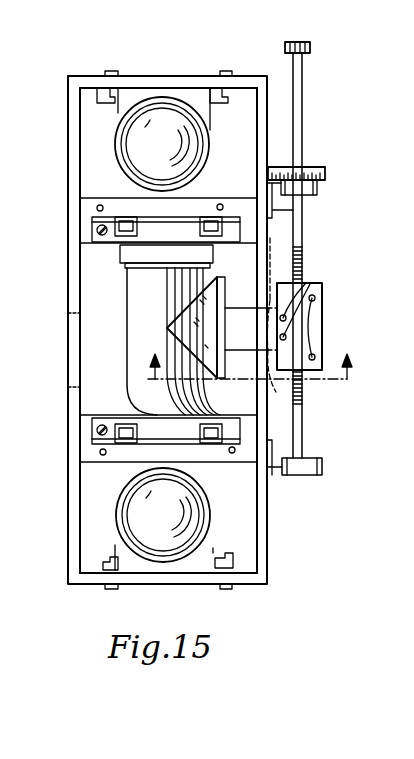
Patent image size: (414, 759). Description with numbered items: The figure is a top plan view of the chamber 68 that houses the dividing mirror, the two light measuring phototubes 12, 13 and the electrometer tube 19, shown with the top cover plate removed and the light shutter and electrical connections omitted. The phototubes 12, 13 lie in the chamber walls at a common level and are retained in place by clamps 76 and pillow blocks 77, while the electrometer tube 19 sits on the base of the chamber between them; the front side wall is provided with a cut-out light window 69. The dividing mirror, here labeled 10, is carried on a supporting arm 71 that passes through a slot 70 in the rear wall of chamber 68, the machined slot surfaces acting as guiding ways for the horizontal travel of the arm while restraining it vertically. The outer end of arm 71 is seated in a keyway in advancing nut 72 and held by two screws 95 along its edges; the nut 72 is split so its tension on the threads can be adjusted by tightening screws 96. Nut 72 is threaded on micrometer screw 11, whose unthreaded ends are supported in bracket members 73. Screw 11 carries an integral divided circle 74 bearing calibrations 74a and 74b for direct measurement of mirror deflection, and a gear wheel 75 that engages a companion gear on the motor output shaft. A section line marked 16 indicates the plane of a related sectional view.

The prism 10 is at (212, 378).
The micrometer screw 11 is at (302, 106).
The phototube 12 is at (166, 112).
The phototube 13 is at (145, 524).
The section line 16 is at (250, 360).
The electrometer tube 19 is at (140, 325).
The chamber 68 is at (74, 178).
The light window 69 is at (76, 306).
The slot 70 is at (275, 238).
The supporting arm 71 is at (275, 388).
The advancing nut 72 is at (323, 332).
The bracket members 73 is at (290, 211).
The divided circle 74 is at (326, 170).
The calibrations 74a is at (322, 167).
The calibrations 74b is at (300, 186).
The gear wheel 75 is at (293, 44).
The clamps 76 is at (112, 116).
The pillow blocks 77 is at (134, 95).
The screws 95 is at (300, 284).
The screws 96 is at (316, 298).